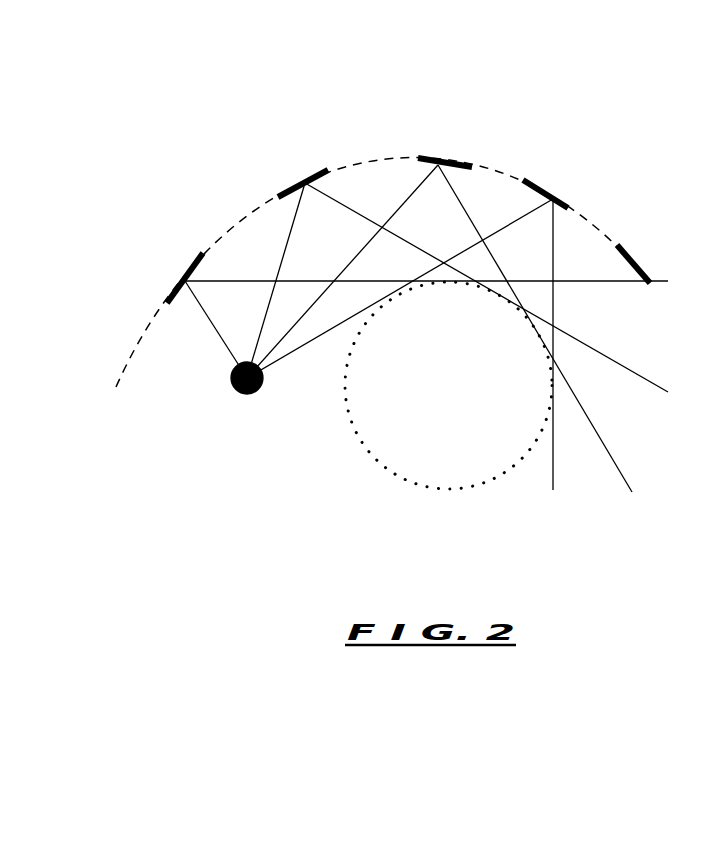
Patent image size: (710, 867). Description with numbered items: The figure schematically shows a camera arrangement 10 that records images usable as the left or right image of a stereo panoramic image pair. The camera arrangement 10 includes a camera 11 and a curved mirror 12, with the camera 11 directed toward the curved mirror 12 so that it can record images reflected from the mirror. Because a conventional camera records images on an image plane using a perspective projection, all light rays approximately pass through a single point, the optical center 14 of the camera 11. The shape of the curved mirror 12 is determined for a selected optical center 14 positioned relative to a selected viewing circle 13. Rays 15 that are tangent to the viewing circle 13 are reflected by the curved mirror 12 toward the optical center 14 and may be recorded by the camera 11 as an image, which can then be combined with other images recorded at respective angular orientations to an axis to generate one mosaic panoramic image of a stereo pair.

The camera arrangement 10 is at (142, 160).
The camera 11 is at (232, 385).
The curved mirror 12 is at (377, 168).
The viewing circle 13 is at (377, 455).
The optical center 14 is at (250, 418).
The rays 15 is at (590, 282).